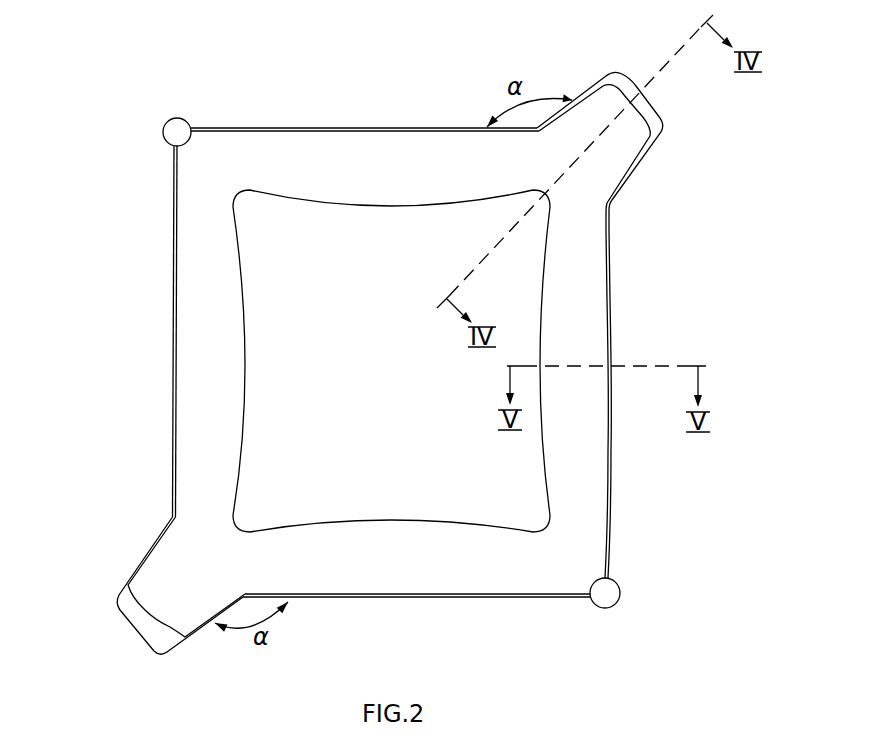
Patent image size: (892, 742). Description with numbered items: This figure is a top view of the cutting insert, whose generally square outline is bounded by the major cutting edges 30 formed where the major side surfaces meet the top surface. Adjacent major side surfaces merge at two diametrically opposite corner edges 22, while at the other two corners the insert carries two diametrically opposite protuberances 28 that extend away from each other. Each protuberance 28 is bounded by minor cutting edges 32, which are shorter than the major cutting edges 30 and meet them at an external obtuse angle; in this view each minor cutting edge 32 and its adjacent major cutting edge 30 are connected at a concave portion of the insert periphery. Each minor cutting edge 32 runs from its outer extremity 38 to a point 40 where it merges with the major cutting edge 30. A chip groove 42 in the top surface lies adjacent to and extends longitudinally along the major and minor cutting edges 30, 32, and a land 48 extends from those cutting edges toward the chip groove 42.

The corner edge 22 is at (617, 607).
The protuberance 28 is at (178, 575).
The major cutting edge 30 is at (612, 325).
The minor cutting edge 32 is at (637, 173).
The outer extremity 38 is at (590, 90).
The point 40 is at (612, 208).
The chip groove 42 is at (590, 510).
The land 48 is at (612, 282).